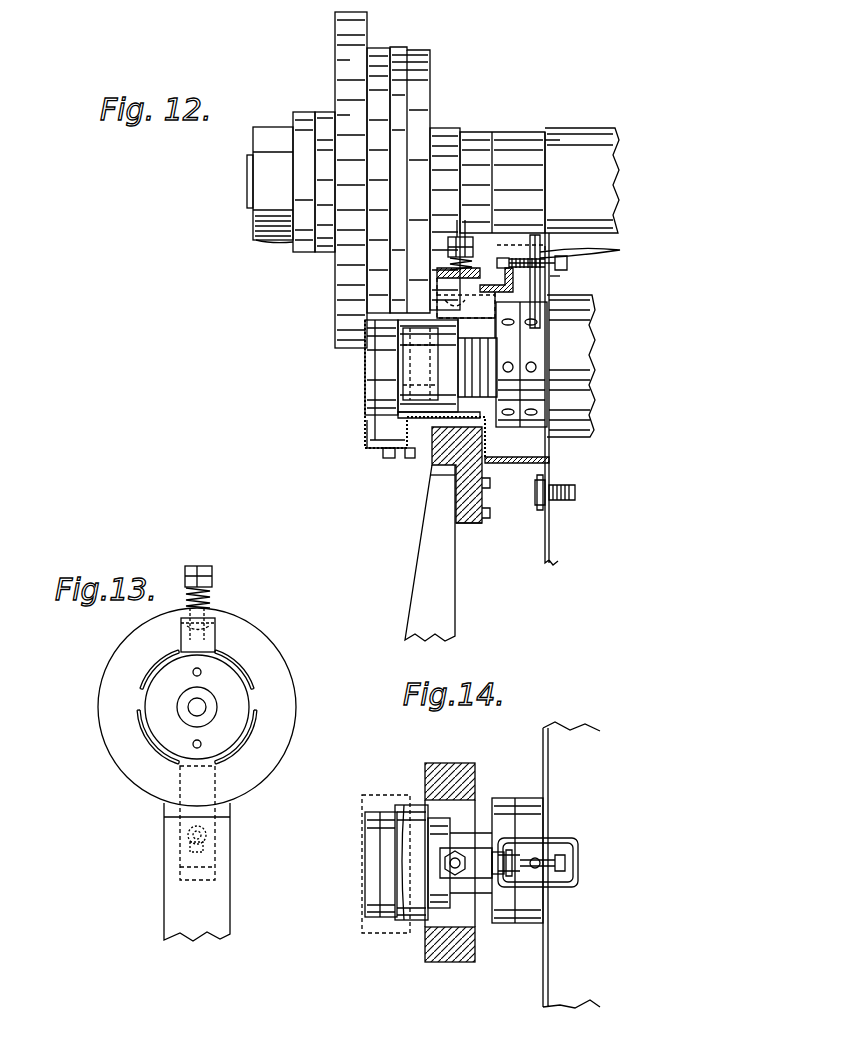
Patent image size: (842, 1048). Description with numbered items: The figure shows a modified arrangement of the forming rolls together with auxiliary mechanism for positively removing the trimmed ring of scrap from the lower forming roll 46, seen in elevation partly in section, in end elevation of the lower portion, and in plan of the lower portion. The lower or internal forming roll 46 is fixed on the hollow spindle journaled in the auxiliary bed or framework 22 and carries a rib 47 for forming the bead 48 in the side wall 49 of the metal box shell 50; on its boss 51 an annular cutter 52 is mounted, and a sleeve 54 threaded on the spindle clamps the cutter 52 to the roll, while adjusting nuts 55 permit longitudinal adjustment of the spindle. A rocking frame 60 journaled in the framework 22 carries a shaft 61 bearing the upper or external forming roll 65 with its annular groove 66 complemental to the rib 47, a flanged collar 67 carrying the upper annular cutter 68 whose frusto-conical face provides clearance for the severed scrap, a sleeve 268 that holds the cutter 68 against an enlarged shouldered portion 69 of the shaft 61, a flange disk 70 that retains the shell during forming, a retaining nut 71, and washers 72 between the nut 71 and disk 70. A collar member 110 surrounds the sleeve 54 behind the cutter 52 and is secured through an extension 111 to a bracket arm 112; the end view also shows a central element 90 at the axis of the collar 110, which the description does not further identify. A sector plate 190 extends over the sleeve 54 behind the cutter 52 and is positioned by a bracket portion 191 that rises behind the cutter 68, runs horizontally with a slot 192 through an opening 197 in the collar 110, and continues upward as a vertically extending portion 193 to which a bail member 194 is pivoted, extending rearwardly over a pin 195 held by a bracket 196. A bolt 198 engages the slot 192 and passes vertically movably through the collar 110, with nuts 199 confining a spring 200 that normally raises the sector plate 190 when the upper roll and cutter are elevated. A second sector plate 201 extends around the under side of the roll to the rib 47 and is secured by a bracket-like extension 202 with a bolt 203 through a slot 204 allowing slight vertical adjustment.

In FIG. 12, the auxiliary bed or framework 22 is at (576, 408).
In FIG. 14, the auxiliary bed or framework 22 is at (571, 1008).
In FIG. 12, the lower or internal forming roll 46 is at (398, 398).
In FIG. 13, the lower or internal forming roll 46 is at (160, 733).
In FIG. 14, the lower or internal forming roll 46 is at (385, 887).
In FIG. 12, the rib 47 is at (372, 442).
In FIG. 14, the rib 47 is at (363, 910).
In FIG. 12, the bead 48 is at (392, 440).
In FIG. 12, the side wall 49 is at (396, 450).
In FIG. 12, the metal box shell 50 is at (405, 372).
In FIG. 14, the metal box shell 50 is at (374, 870).
In FIG. 12, the boss 51 is at (422, 450).
In FIG. 12, the annular cutter 52 is at (368, 355).
In FIG. 14, the annular cutter 52 is at (380, 840).
In FIG. 12, the sleeve 54 is at (432, 446).
In FIG. 12, the adjusting nuts 55 is at (515, 352).
In FIG. 12, the rocking frame 60 is at (578, 140).
In FIG. 14, the rocking frame 60 is at (618, 930).
In FIG. 12, the shaft 61 is at (250, 179).
In FIG. 12, the upper or external forming roll 65 is at (402, 92).
In FIG. 12, the annular groove 66 is at (390, 58).
In FIG. 12, the flanged collar 67 is at (455, 148).
In FIG. 12, the annular cutter 68 is at (428, 110).
In FIG. 12, the enlarged shouldered portion 69 is at (528, 133).
In FIG. 12, the flange disk 70 is at (336, 40).
In FIG. 12, the retaining nut 71 is at (262, 240).
In FIG. 12, the washers 72 is at (323, 112).
In FIG. 13, the pivot pin 90 is at (207, 707).
In FIG. 12, the collar member 110 is at (432, 470).
In FIG. 13, the collar member 110 is at (128, 656).
In FIG. 14, the collar member 110 is at (428, 766).
In FIG. 12, the extension 111 is at (470, 525).
In FIG. 13, the extension 111 is at (168, 812).
In FIG. 12, the bracket arm 112 is at (418, 592).
In FIG. 13, the bracket arm 112 is at (168, 916).
In FIG. 13, the sector plate 190 is at (252, 682).
In FIG. 14, the sector plate 190 is at (418, 920).
In FIG. 12, the bracket portion 191 is at (542, 302).
In FIG. 13, the bracket portion 191 is at (215, 635).
In FIG. 14, the bracket portion 191 is at (475, 875).
In FIG. 12, the slot 192 is at (500, 263).
In FIG. 14, the slot 192 is at (470, 855).
In FIG. 12, the vertically extending portion 193 is at (545, 266).
In FIG. 14, the vertically extending portion 193 is at (512, 852).
In FIG. 14, the bail member 194 is at (560, 840).
In FIG. 12, the pin 195 is at (620, 248).
In FIG. 14, the pin 195 is at (540, 868).
In FIG. 12, the bracket 196 is at (560, 276).
In FIG. 14, the bracket 196 is at (565, 862).
In FIG. 12, the slot or opening 197 is at (468, 298).
In FIG. 13, the slot or opening 197 is at (215, 645).
In FIG. 12, the bolt 198 is at (462, 237).
In FIG. 13, the bolt 198 is at (196, 566).
In FIG. 14, the bolt 198 is at (455, 875).
In FIG. 12, the nuts 199 is at (472, 250).
In FIG. 13, the nuts 199 is at (212, 567).
In FIG. 12, the spring 200 is at (474, 262).
In FIG. 13, the spring 200 is at (210, 592).
In FIG. 12, the sector plate 201 is at (378, 448).
In FIG. 13, the sector plate 201 is at (250, 733).
In FIG. 12, the bracket-like extension 202 is at (518, 464).
In FIG. 13, the bracket-like extension 202 is at (218, 785).
In FIG. 12, the bolt 203 is at (537, 495).
In FIG. 13, the bolt 203 is at (180, 840).
In FIG. 12, the slot 204 is at (542, 505).
In FIG. 13, the slot 204 is at (203, 846).
In FIG. 12, the sleeve 268 is at (480, 155).